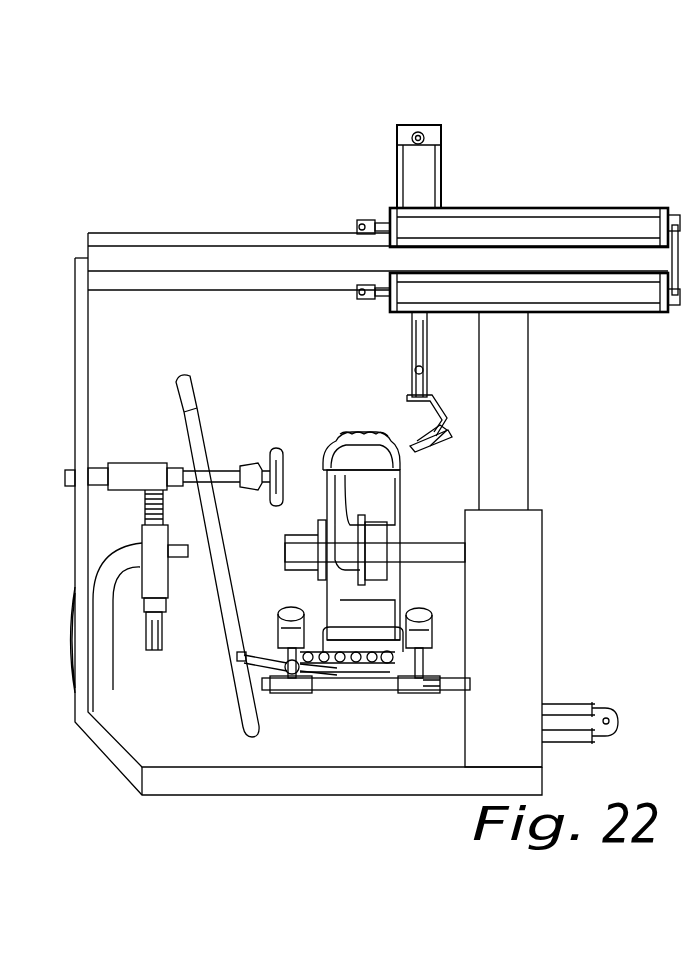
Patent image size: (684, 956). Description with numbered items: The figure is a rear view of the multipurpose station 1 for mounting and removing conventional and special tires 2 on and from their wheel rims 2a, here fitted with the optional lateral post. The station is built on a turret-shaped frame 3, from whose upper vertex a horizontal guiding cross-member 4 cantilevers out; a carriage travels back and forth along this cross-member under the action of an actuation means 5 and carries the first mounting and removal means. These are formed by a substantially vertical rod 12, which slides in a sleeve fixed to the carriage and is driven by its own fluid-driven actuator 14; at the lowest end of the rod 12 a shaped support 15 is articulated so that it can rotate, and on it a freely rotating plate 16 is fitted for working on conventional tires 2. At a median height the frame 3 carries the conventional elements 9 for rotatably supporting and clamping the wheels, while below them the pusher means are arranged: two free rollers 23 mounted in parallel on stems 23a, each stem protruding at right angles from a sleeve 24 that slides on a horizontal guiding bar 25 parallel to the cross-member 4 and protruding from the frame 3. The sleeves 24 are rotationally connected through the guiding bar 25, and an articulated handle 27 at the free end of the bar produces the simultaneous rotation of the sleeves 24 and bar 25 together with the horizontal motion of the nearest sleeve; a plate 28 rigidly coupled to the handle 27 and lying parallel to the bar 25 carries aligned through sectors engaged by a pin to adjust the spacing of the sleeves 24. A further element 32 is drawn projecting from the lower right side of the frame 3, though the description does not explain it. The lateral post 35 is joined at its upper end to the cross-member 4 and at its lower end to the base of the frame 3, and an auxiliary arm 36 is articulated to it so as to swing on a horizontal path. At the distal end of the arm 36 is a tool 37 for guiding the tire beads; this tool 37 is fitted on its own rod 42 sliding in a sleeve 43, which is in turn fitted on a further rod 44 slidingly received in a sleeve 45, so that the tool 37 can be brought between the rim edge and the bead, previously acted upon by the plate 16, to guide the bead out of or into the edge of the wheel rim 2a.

The multipurpose station 1 is at (193, 167).
The tire 2 is at (358, 432).
The wheel rim 2a is at (400, 498).
The turret-shaped frame 3 is at (540, 554).
The horizontal guiding cross-member 4 is at (258, 238).
The actuation means 5 is at (591, 208).
The elements for rotatably supporting and clamping the wheels 9 is at (300, 568).
The vertical rod 12 is at (414, 341).
The fluid-driven actuator 14 is at (438, 168).
The shaped support 15 is at (432, 436).
The freely rotating plate 16 is at (430, 455).
The free roller 23 is at (284, 640).
The stem 23a is at (440, 668).
The sleeve 24 is at (290, 690).
The horizontal guiding bar 25 is at (357, 690).
The articulated handle 27 is at (201, 425).
The plate 28 is at (372, 640).
The coupling 32 is at (565, 720).
The lateral post 35 is at (80, 392).
The auxiliary arm 36 is at (117, 618).
The tool for guiding the beads 37 is at (284, 458).
The rod 42 is at (224, 480).
The sleeve 43 is at (137, 470).
The further rod 44 is at (160, 632).
The sleeve 45 is at (155, 575).